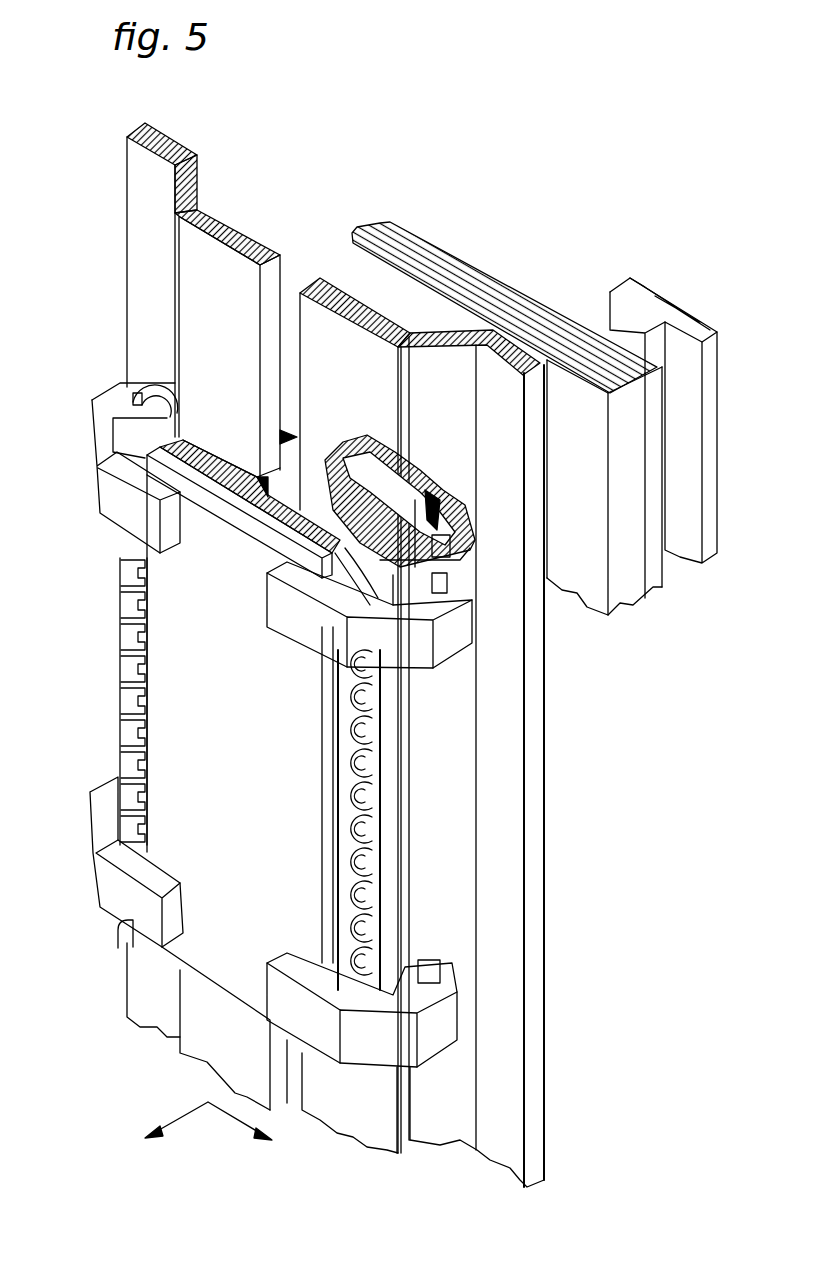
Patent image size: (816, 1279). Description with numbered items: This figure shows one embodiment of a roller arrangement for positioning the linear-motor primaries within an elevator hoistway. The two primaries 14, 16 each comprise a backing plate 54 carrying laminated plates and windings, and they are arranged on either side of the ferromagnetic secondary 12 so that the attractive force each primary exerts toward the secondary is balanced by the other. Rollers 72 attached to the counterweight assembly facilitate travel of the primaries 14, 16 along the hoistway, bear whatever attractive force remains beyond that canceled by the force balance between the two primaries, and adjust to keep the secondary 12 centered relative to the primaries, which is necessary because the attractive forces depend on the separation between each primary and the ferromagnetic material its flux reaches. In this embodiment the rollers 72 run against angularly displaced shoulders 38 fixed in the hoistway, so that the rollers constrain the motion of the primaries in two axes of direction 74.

The secondary 12 is at (312, 235).
The primary 14 is at (230, 462).
The primary 16 is at (386, 493).
The angularly displaced shoulders 38 is at (202, 182).
The backing plate 54 is at (362, 467).
The rollers 72 is at (430, 960).
The two axes of direction 74 is at (208, 1102).